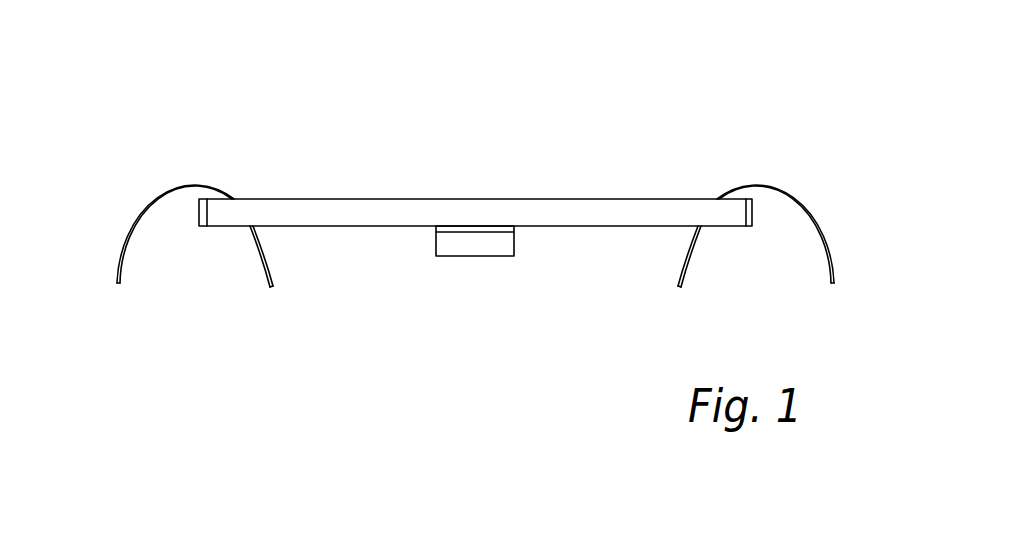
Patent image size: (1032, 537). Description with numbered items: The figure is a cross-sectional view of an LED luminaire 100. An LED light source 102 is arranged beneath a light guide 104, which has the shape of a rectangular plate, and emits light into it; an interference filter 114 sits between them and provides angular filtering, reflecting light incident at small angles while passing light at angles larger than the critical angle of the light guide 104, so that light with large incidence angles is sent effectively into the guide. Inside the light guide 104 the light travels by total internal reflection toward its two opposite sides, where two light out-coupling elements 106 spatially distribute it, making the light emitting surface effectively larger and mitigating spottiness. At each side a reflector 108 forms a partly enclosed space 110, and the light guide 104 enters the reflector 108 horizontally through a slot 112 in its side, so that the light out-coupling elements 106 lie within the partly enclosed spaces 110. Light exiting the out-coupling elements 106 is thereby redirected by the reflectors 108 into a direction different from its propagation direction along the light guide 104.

The LED luminaire 100 is at (786, 75).
The LED light source 102 is at (475, 243).
The light guide 104 is at (433, 199).
The light out-coupling elements 106 is at (195, 219).
The reflectors 108 is at (138, 222).
The partly enclosed spaces 110 is at (188, 204).
The slots 112 is at (235, 198).
The interference filter 114 is at (441, 230).